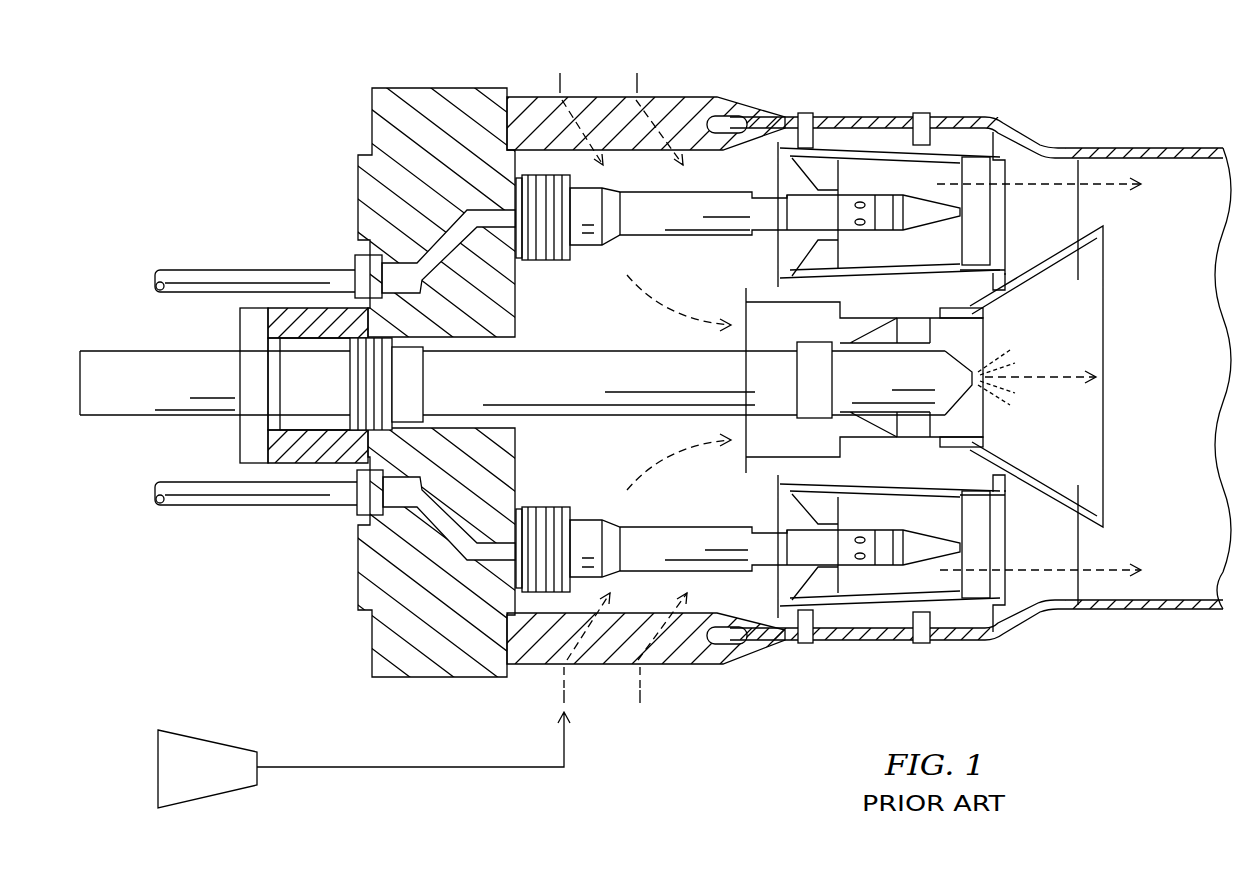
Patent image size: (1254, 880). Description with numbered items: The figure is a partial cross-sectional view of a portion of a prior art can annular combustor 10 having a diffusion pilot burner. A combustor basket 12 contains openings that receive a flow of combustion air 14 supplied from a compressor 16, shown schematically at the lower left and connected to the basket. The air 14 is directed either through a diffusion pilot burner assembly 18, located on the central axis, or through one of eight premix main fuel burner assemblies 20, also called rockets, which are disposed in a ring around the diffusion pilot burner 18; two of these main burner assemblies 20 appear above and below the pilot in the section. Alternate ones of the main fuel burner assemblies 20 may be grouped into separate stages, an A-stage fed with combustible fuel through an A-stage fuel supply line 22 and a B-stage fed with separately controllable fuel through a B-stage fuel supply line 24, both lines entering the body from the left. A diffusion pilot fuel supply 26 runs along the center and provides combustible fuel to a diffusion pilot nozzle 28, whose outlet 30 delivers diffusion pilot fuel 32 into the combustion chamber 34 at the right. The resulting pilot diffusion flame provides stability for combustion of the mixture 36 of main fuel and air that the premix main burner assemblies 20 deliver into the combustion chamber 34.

The can annular combustor 10 is at (1123, 91).
The combustor basket 12 is at (657, 97).
The combustion air 14 is at (637, 87).
The compressor 16 is at (205, 738).
The diffusion pilot burner assembly 18 is at (758, 470).
The premix main fuel burner assemblies 20 is at (778, 253).
The A-stage fuel supply line 22 is at (278, 269).
The B-stage fuel supply line 24 is at (278, 506).
The diffusion pilot fuel supply 26 is at (150, 353).
The diffusion pilot nozzle 28 is at (638, 348).
The outlet 30 is at (977, 368).
The diffusion pilot fuel 32 is at (977, 375).
The combustion chamber 34 is at (1186, 467).
The mixture of main fuel and air 36 is at (1110, 185).